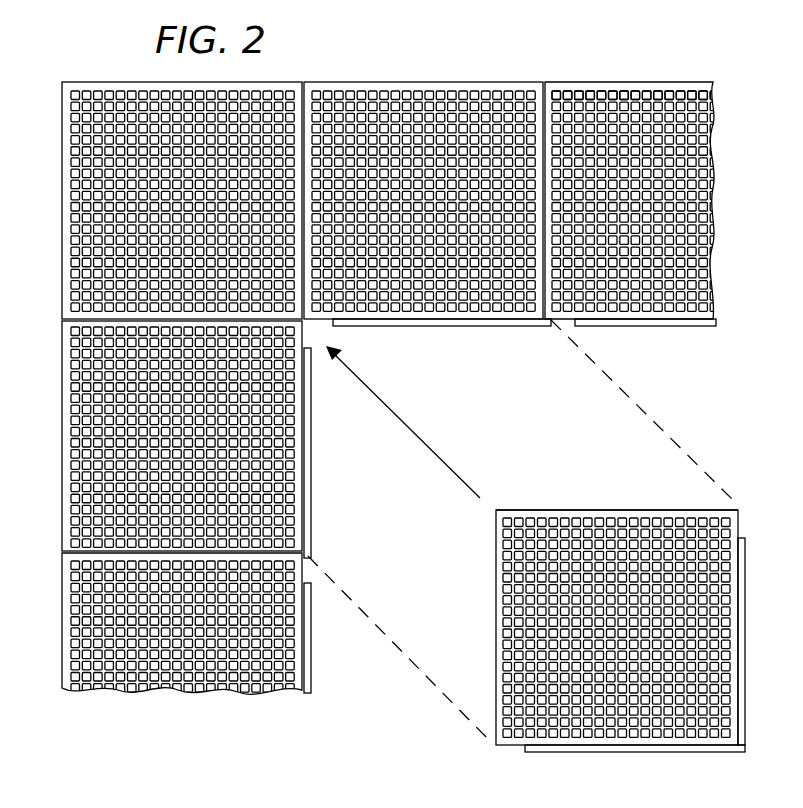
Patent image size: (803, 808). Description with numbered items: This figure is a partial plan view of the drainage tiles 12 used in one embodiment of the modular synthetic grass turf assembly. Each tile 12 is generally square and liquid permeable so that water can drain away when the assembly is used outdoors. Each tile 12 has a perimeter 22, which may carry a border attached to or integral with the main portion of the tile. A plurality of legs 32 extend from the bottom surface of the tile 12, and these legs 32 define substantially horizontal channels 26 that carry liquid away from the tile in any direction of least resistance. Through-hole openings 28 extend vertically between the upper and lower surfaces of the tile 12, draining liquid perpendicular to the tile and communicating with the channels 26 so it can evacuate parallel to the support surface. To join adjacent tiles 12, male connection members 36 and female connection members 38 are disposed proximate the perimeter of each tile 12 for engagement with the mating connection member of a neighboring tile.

The tile 12 is at (55, 242).
The perimeter 22 is at (494, 75).
The channels 26 is at (530, 513).
The through-hole openings 28 is at (158, 483).
The legs 32 is at (432, 142).
The male connection member 36 is at (508, 325).
The female connection member 38 is at (603, 494).